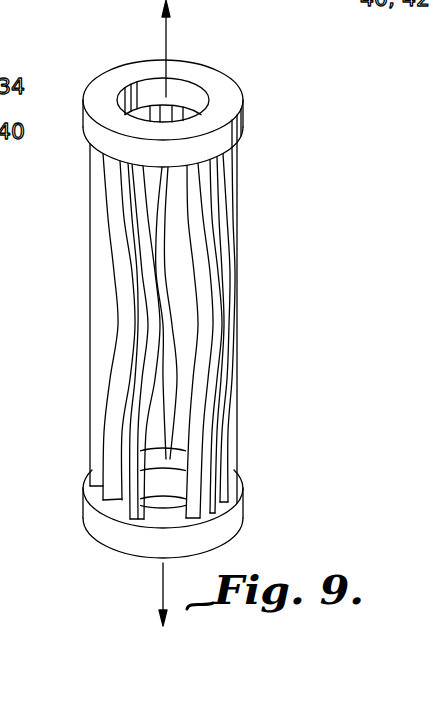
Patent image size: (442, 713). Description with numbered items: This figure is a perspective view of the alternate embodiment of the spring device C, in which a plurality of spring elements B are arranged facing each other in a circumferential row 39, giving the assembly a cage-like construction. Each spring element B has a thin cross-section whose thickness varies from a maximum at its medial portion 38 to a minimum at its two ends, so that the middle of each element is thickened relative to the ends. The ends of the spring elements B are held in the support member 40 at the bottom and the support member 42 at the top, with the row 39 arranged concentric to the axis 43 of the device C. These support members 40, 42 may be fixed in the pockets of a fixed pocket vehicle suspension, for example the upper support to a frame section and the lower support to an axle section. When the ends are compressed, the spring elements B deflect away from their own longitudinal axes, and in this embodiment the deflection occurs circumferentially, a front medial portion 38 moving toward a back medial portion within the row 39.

The medial portion 38 is at (183, 326).
The circumferential row 39 is at (225, 330).
The support member 40 is at (240, 512).
The support member 42 is at (242, 127).
The axis of device 43 is at (167, 33).
The spring element B is at (237, 227).
The spring device C is at (84, 371).